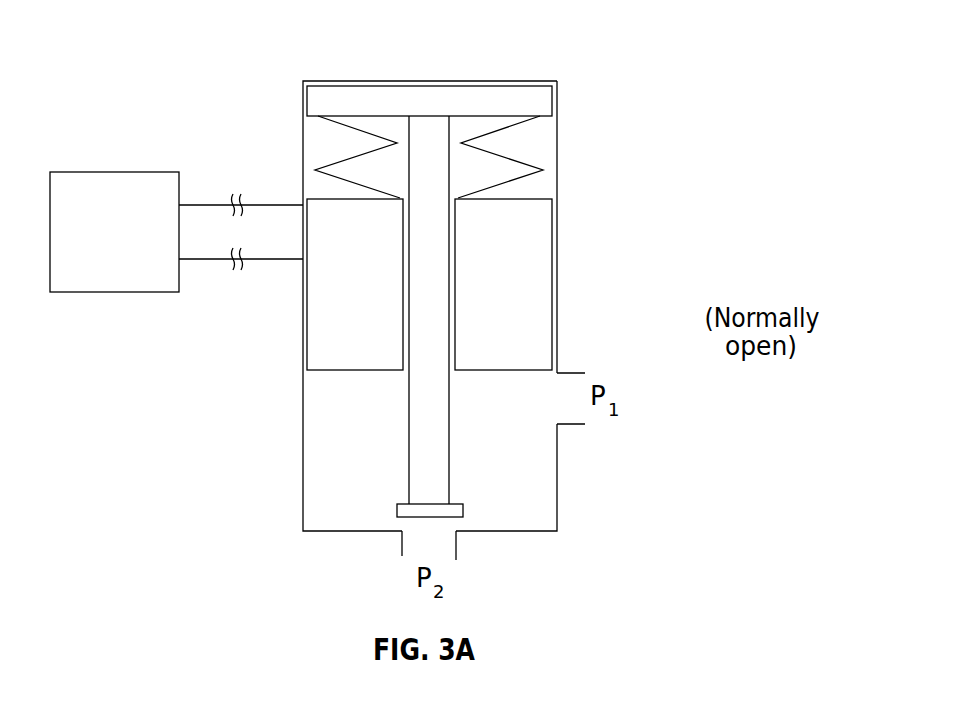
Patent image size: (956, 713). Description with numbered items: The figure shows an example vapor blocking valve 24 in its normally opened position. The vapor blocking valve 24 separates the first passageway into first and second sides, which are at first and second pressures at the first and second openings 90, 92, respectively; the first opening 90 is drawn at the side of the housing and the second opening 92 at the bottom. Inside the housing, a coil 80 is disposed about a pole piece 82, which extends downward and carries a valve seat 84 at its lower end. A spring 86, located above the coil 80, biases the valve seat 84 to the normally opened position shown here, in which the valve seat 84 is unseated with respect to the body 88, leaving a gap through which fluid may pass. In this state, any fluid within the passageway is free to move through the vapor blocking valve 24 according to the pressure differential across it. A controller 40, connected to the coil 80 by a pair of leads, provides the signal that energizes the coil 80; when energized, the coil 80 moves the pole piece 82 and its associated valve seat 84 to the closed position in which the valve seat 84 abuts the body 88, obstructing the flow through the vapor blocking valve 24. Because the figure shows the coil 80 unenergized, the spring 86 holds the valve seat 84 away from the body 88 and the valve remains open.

The vapor blocking valve 24 is at (603, 43).
The controller 40 is at (99, 246).
The coil 80 is at (553, 283).
The pole piece 82 is at (428, 389).
The valve seat 84 is at (400, 519).
The spring 86 is at (528, 174).
The body 88 is at (505, 532).
The first opening 90 is at (579, 424).
The second opening 92 is at (402, 556).